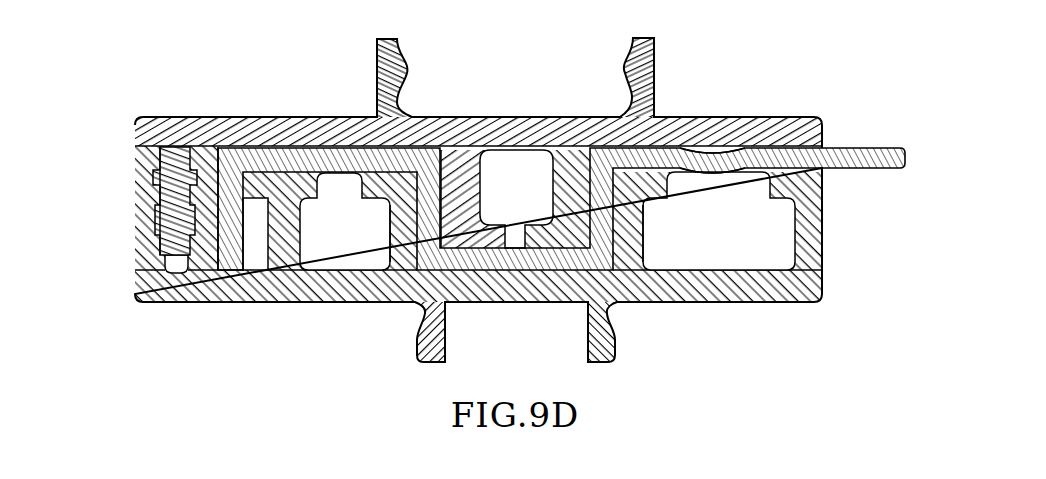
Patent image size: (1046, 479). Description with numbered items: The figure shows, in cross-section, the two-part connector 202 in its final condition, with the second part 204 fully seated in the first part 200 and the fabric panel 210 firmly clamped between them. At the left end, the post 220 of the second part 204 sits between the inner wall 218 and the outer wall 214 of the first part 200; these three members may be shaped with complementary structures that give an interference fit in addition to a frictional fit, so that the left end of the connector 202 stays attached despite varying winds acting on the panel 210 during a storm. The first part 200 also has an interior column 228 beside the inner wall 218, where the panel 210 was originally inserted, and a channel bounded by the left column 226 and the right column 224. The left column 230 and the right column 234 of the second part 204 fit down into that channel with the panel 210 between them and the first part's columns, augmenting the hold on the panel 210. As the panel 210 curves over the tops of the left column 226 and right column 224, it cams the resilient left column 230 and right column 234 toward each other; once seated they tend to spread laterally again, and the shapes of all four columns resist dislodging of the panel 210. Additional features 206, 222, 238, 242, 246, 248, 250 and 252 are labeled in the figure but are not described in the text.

The first part 200 is at (134, 156).
The connector 202 is at (145, 362).
The second part 204 is at (266, 116).
The bottom housing 206 is at (152, 292).
The panel 210 is at (890, 152).
The outer wall 214 is at (142, 232).
The inner wall 218 is at (200, 262).
The post 220 is at (182, 166).
The right cavity 222 is at (795, 222).
The right column 224 is at (645, 250).
The left column 226 is at (398, 242).
The interior column 228 is at (298, 222).
The left column 230 is at (466, 194).
The right column 234 is at (558, 180).
The lower left post 238 is at (445, 352).
The lower right post 242 is at (588, 352).
The upper left post 246 is at (384, 78).
The upper right post 248 is at (650, 70).
The dip / seal region 250 is at (736, 158).
The top plate surface 252 is at (516, 122).